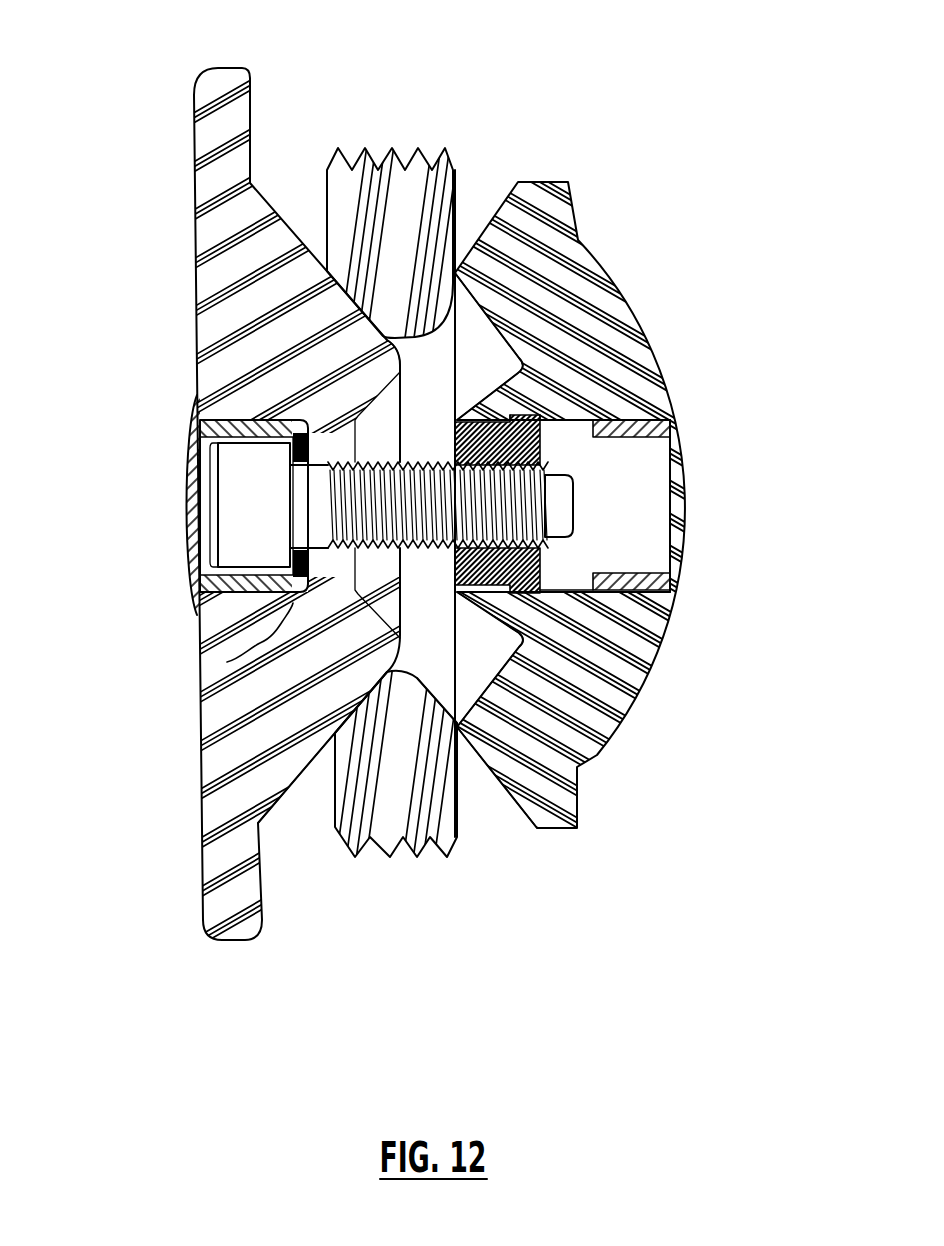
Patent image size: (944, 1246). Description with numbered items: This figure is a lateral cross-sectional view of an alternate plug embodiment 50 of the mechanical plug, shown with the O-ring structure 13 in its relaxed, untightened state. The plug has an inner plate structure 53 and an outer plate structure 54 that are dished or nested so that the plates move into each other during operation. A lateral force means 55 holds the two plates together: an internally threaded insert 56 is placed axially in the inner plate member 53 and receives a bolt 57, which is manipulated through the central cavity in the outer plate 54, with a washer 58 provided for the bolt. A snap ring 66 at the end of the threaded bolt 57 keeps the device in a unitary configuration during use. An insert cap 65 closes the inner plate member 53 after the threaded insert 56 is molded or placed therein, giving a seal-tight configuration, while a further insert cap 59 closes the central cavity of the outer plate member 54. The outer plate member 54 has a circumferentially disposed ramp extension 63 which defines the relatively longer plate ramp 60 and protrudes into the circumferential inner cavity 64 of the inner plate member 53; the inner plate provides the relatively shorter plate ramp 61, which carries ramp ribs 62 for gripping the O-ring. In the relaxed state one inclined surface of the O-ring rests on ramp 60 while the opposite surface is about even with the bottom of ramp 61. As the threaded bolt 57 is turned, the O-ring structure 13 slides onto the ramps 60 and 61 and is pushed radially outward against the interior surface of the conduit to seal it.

The O-ring structure 13 is at (347, 190).
The alternate plug embodiment 50 is at (527, 116).
The inner plate structure 53 is at (641, 343).
The outer plate structure 54 is at (208, 240).
The lateral force means 55 is at (652, 476).
The internally threaded insert 56 is at (543, 568).
The bolt 57 is at (238, 543).
The washer 58 is at (228, 660).
The insert cap 59 is at (186, 490).
The plate ramp 60 is at (298, 792).
The plate ramp 61 is at (468, 737).
The ramp ribs 62 is at (498, 755).
The ramp extension 63 is at (383, 374).
The circumferential inner cavity 64 is at (475, 376).
The insert cap 65 is at (685, 538).
The snap ring 66 is at (550, 463).